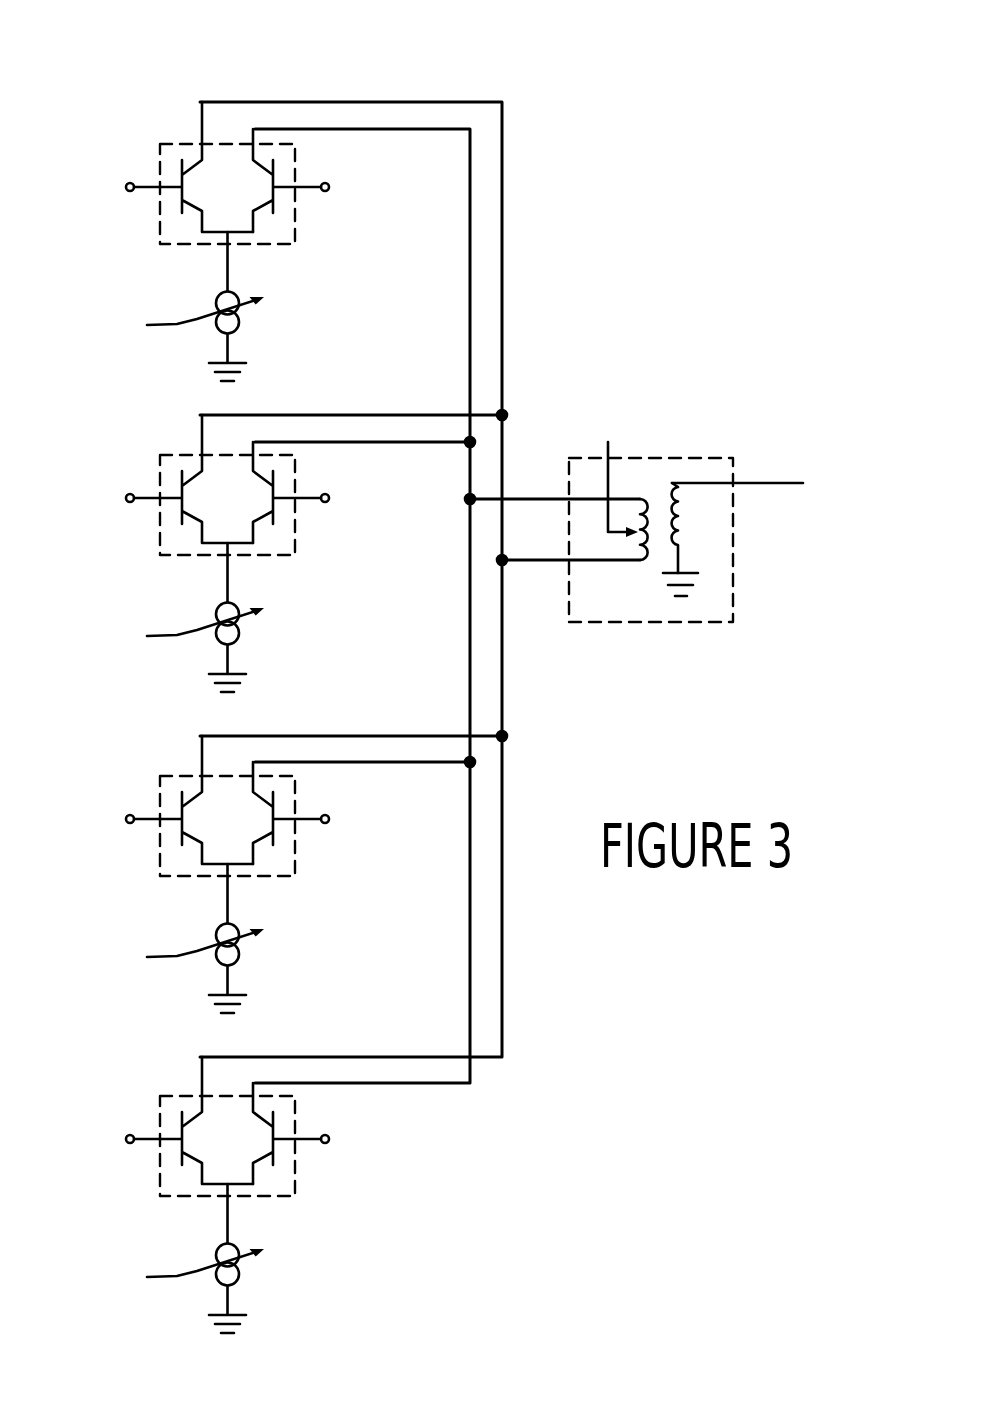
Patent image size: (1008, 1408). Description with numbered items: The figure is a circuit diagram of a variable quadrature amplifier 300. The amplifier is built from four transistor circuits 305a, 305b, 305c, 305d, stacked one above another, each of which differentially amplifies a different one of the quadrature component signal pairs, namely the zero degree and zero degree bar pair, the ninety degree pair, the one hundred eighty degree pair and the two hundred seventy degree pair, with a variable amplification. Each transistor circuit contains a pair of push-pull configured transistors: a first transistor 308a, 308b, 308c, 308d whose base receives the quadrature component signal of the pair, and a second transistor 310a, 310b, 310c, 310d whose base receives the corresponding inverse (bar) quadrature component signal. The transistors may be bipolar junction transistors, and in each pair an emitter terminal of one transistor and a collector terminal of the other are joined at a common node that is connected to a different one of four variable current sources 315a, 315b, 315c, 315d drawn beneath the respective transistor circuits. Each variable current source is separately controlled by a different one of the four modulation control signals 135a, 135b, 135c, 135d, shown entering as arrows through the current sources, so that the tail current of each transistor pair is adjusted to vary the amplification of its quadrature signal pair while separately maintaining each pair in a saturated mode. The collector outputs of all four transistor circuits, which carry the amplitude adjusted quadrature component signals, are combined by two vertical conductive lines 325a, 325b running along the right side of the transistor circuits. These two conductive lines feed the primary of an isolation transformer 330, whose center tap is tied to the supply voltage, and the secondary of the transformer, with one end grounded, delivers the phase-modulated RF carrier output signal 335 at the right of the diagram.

The variable quadrature amplifier 300 is at (526, 74).
The transistor circuit 305a is at (295, 207).
The transistor circuit 305b is at (295, 518).
The transistor circuit 305c is at (295, 839).
The transistor circuit 305d is at (295, 1159).
The transistor 308a is at (198, 212).
The transistor 308b is at (198, 523).
The transistor 308c is at (198, 844).
The transistor 308d is at (198, 1164).
The transistor 310a is at (258, 210).
The transistor 310b is at (258, 521).
The transistor 310c is at (258, 842).
The transistor 310d is at (258, 1162).
The modulation control signal 135a is at (175, 326).
The modulation control signal 135b is at (175, 637).
The modulation control signal 135c is at (175, 958).
The modulation control signal 135d is at (175, 1278).
The variable current source 315a is at (245, 318).
The variable current source 315b is at (245, 629).
The variable current source 315c is at (245, 950).
The variable current source 315d is at (245, 1270).
The conductive line 325a is at (502, 249).
The conductive line 325b is at (470, 334).
The isolation transformer 330 is at (677, 452).
The phase-modulated RF carrier output signal 335 is at (765, 483).